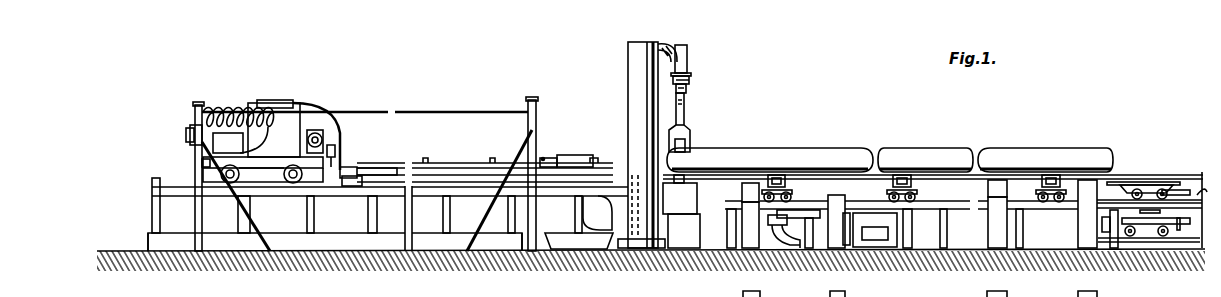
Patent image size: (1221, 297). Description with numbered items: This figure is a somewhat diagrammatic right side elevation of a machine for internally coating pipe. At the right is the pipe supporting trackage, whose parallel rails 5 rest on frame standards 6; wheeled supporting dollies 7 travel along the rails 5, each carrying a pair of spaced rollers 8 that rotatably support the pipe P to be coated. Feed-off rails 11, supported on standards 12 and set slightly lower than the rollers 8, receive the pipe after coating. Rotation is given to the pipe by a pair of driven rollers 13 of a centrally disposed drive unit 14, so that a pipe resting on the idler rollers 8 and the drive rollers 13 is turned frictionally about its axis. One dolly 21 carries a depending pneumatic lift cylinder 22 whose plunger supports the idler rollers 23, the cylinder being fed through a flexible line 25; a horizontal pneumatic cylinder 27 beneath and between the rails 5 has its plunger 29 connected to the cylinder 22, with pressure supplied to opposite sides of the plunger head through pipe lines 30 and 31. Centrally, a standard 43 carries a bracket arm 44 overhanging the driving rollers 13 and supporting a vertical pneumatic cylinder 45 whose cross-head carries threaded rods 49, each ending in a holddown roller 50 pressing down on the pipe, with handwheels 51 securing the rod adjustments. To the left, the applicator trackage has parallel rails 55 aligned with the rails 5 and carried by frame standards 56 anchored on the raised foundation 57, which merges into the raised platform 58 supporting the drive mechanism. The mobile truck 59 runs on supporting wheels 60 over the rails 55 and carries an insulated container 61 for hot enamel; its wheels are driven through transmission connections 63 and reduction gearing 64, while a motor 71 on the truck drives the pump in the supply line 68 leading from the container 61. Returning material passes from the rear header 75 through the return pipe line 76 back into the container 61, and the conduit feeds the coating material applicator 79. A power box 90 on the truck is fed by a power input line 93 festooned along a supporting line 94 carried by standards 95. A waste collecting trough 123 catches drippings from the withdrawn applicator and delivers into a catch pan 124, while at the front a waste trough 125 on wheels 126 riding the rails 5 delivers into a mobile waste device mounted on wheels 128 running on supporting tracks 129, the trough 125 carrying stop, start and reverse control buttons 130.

The rails 5 is at (826, 172).
The frame standards 6 is at (730, 228).
The wheeled supporting dollies 7 is at (915, 196).
The rollers 8 is at (902, 176).
The feed-off rails 11 is at (748, 182).
The standards 12 is at (750, 236).
The driven rollers 13 is at (690, 152).
The drive unit 14 is at (688, 193).
The pipe supporting dolly 21 is at (782, 186).
The pneumatic lift cylinder 22 is at (775, 226).
The idler rollers 23 is at (776, 175).
The flexible line 25 is at (800, 240).
The pneumatic cylinder 27 is at (906, 248).
The plunger 29 is at (795, 213).
The pipe line 30 is at (900, 215).
The pipe line 31 is at (876, 247).
The standard 43 is at (636, 87).
The bracket arm 44 is at (668, 44).
The pneumatic cylinder 45 is at (690, 60).
The threaded rods 49 is at (684, 110).
The holddown roller 50 is at (672, 156).
The handwheels 51 is at (692, 82).
The rails 55 is at (175, 190).
The frame standards 56 is at (157, 222).
The raised foundation 57 is at (320, 243).
The raised platform 58 is at (686, 236).
The mobile truck 59 is at (203, 161).
The supporting wheels 60 is at (274, 185).
The container 61 is at (280, 102).
The transmission connections 63 is at (243, 181).
The reduction gearing 64 is at (197, 120).
The supply line 68 is at (347, 164).
The motor 71 is at (318, 130).
The rear header 75 is at (350, 178).
The return pipe line 76 is at (346, 135).
The coating material applicator 79 is at (570, 156).
The power box 90 is at (190, 133).
The power input line 93 is at (228, 110).
The supporting line 94 is at (365, 102).
The standards 95 is at (191, 225).
The pipe P is at (858, 150).
The waste collecting trough 123 is at (568, 196).
The catch pan 124 is at (606, 249).
The waste trough 125 is at (1163, 185).
The wheels 126 is at (1160, 181).
The wheels 128 is at (1175, 226).
The supporting tracks 129 is at (1130, 237).
The control buttons 130 is at (1186, 186).